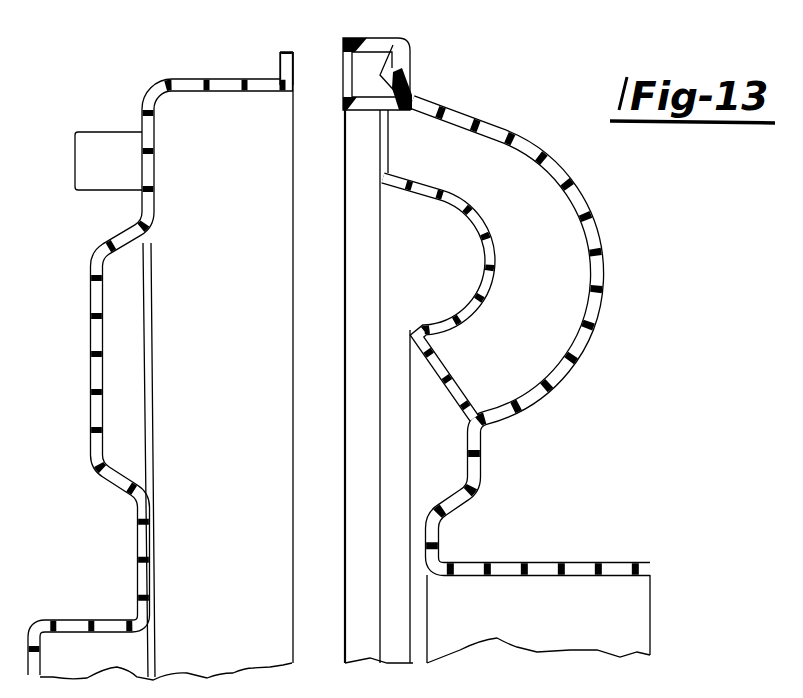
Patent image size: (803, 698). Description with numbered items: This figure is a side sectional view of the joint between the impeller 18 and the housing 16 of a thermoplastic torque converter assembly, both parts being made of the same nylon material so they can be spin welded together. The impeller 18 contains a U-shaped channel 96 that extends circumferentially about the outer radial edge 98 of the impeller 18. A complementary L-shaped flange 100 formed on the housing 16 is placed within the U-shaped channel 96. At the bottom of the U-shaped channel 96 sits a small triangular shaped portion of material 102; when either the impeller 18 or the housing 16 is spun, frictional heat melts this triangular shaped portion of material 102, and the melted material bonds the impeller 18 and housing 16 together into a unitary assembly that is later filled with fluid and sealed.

The housing 16 is at (175, 80).
The impeller 18 is at (473, 117).
The U-shaped channel 96 is at (410, 46).
The outer radial edge 98 is at (410, 97).
The L-shaped flange 100 is at (418, 37).
The triangular shaped portion of material 102 is at (393, 71).